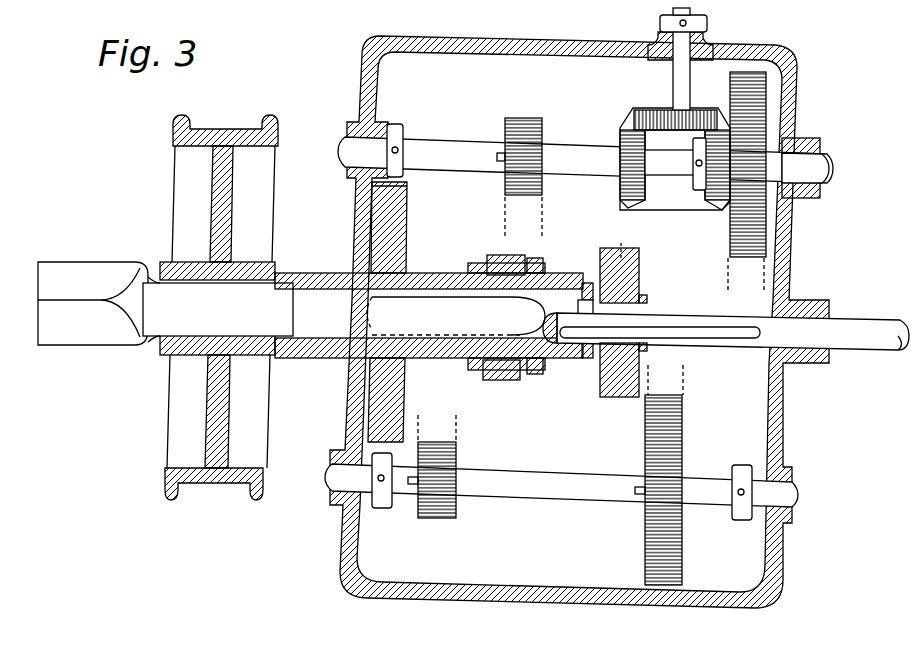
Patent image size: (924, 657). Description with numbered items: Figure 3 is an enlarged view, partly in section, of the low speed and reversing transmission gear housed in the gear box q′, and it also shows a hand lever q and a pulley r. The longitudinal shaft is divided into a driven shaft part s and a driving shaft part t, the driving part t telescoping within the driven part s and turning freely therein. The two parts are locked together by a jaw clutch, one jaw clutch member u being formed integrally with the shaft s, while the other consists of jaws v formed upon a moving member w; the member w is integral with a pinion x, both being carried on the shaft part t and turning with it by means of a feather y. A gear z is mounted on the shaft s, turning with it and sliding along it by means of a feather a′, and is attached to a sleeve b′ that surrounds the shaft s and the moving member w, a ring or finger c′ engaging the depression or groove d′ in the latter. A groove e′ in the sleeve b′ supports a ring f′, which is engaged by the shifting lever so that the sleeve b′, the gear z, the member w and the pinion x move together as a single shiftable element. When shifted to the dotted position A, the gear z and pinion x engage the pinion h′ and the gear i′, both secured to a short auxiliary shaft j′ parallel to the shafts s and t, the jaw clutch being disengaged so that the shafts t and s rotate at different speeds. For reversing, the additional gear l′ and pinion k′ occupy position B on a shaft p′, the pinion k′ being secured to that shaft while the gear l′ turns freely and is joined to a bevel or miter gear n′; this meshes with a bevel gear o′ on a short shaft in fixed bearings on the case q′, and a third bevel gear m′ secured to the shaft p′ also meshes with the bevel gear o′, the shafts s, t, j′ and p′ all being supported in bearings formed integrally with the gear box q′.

The hand lever q is at (135, 259).
The pulley r is at (226, 307).
The driven shaft part s is at (268, 300).
The driving shaft part t is at (726, 322).
The jaw clutch member u is at (585, 283).
The jaws v is at (535, 366).
The moving member w is at (576, 366).
The pinion x is at (628, 322).
The feather y is at (688, 323).
The gear z is at (396, 312).
The feather a′ is at (416, 284).
The sleeve b′ is at (452, 354).
The ring or finger c′ is at (609, 233).
The depression or groove d′ is at (588, 360).
The groove e′ is at (540, 270).
The ring f′ is at (506, 253).
The pinion h′ is at (443, 477).
The gear i′ is at (667, 490).
The short auxiliary shaft j′ is at (561, 489).
The pinion k′ is at (519, 145).
The additional gear l′ is at (745, 224).
The third bevel gear m′ is at (675, 165).
The bevel or miter gear n′ is at (687, 177).
The bevel gear o′ is at (676, 59).
The shaft p′ is at (585, 149).
The gear box q′ is at (818, 279).
The position A is at (450, 435).
The position B is at (536, 225).